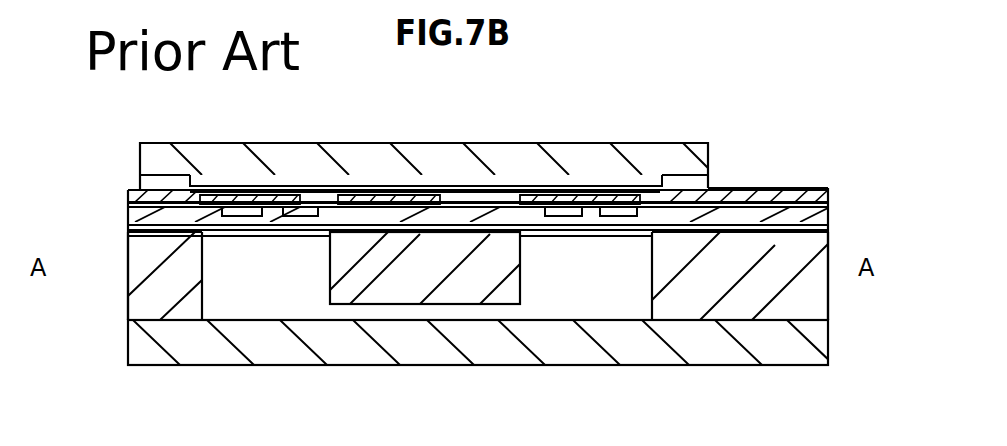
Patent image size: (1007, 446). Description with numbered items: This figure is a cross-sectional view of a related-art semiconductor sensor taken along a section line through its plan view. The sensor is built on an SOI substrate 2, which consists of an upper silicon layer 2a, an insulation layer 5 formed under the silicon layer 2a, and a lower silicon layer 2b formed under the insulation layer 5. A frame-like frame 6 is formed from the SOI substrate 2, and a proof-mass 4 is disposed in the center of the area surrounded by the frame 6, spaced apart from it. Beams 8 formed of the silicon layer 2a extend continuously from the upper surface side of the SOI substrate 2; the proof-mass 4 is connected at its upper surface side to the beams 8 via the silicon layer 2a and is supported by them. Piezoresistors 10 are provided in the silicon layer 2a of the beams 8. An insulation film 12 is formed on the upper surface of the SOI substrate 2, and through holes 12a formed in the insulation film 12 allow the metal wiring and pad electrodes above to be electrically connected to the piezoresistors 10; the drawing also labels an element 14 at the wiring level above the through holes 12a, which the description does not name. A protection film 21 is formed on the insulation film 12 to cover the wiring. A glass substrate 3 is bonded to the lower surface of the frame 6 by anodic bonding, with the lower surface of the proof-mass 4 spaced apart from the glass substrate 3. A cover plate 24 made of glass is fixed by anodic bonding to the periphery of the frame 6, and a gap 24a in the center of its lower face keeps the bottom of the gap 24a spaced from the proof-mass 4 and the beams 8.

The SOI substrate 2 is at (442, 259).
The silicon layer 2a is at (124, 208).
The silicon layer 2b is at (209, 277).
The glass substrate 3 is at (830, 350).
The proof-mass 4 is at (453, 236).
The insulation layer 5 is at (830, 226).
The frame 6 is at (797, 275).
The beams 8 is at (268, 216).
The piezoresistors 10 is at (618, 212).
The insulation film 12 is at (758, 188).
The through holes 12a is at (555, 204).
The upper electrode 14 is at (590, 199).
The protection film 21 is at (797, 188).
The cover plate 24 is at (483, 175).
The gap 24a is at (353, 180).